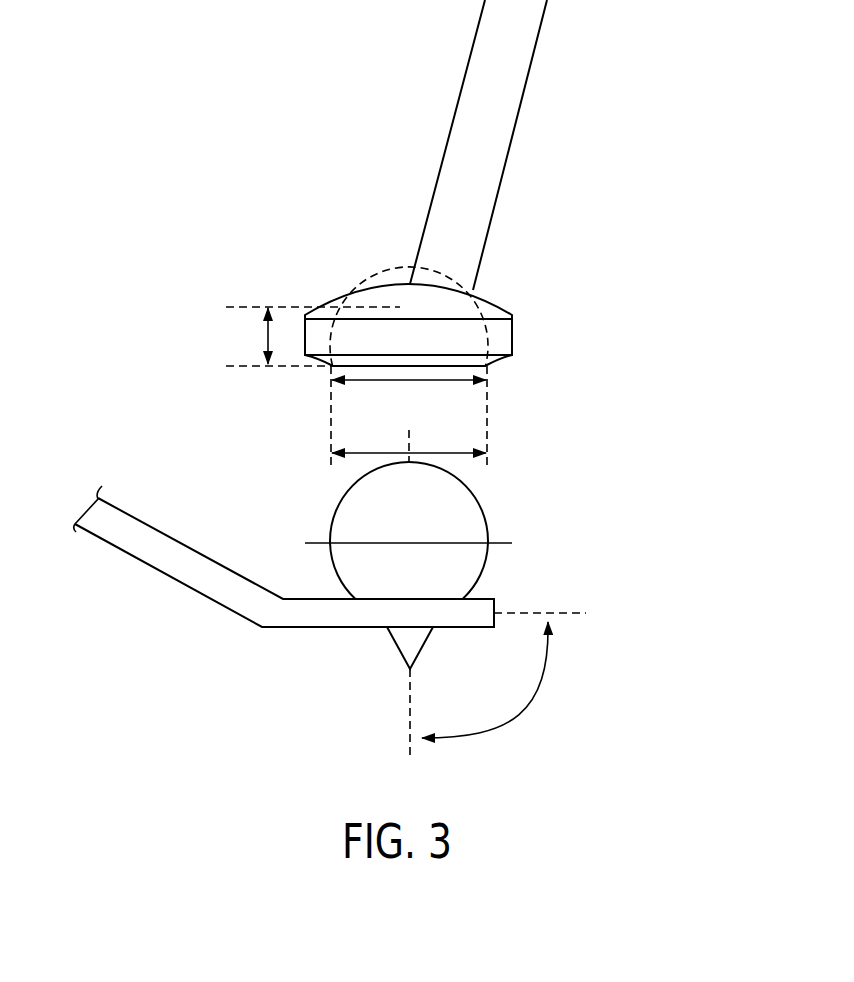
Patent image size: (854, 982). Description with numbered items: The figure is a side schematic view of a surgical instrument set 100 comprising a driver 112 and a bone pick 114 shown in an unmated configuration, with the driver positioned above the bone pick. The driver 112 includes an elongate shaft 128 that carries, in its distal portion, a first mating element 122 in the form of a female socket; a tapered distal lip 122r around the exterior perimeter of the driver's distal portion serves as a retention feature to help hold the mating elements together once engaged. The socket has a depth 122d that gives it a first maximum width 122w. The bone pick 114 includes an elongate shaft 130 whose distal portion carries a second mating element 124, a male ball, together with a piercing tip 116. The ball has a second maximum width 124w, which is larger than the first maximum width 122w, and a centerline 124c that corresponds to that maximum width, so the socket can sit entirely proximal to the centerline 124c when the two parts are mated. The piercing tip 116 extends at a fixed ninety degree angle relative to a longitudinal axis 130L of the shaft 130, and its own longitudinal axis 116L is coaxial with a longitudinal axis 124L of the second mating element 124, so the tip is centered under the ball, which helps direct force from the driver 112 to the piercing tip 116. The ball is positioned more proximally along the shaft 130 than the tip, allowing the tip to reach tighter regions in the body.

The surgical instrument set 100 is at (166, 284).
The driver 112 is at (544, 104).
The bone pick 114 is at (509, 503).
The piercing tip 116 is at (422, 650).
The longitudinal axis of the piercing tip 116L is at (408, 431).
The first mating element 122 is at (478, 335).
The depth 122d is at (264, 330).
The tapered distal lip 122r is at (500, 360).
The first maximum width 122w is at (456, 384).
The second mating element 124 is at (488, 576).
The centerline 124c is at (386, 542).
The longitudinal axis of the second mating element 124L is at (412, 726).
The second maximum width 124w is at (357, 453).
The elongate shaft 128 is at (472, 46).
The elongate shaft 130 is at (173, 578).
The longitudinal axis of the bone pick's shaft 130L is at (561, 613).